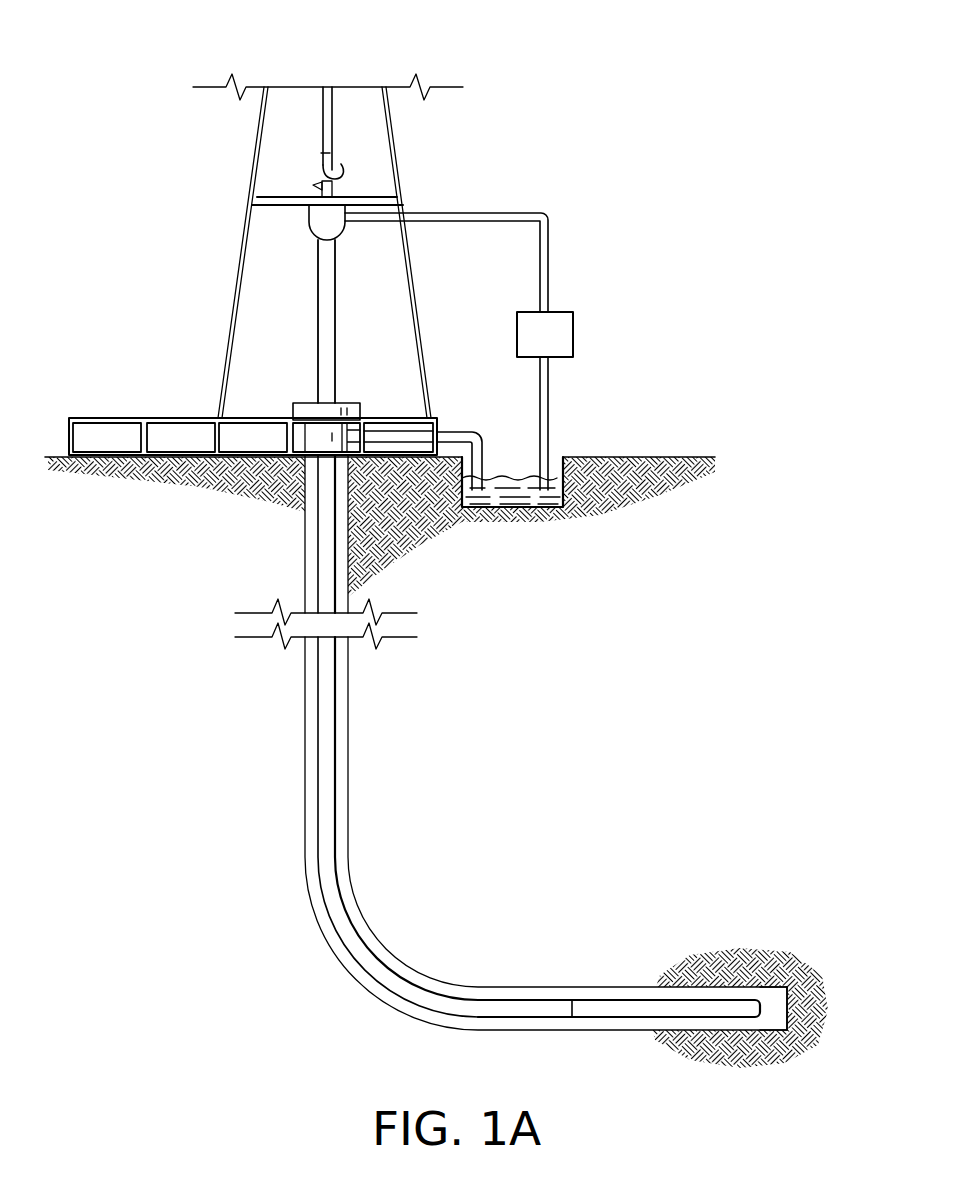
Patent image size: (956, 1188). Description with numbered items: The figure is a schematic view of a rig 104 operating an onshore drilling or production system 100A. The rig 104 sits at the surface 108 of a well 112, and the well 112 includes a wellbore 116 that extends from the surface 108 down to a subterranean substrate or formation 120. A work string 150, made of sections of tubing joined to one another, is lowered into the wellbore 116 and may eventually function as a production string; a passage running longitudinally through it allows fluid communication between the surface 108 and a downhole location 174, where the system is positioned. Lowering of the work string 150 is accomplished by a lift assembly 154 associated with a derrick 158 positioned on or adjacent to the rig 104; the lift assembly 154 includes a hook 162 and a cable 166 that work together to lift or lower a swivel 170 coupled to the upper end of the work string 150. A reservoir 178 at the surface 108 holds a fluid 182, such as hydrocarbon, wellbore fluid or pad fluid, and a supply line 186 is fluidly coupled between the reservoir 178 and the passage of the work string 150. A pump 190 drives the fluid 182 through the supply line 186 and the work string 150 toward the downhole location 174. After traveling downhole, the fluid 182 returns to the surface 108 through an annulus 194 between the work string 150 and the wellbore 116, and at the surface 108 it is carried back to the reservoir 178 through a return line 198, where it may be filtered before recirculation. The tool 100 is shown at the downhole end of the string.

The onshore drilling or production system 100A is at (645, 78).
The downhole tool 100 is at (599, 988).
The rig 104 is at (112, 417).
The surface 108 is at (652, 456).
The well 112 is at (307, 225).
The wellbore 116 is at (305, 748).
The subterranean formation 120 is at (728, 941).
The work string 150 is at (318, 703).
The lift assembly 154 is at (300, 98).
The derrick 158 is at (418, 282).
The hook 162 is at (343, 181).
The cable 166 is at (322, 147).
The swivel 170 is at (318, 240).
The downhole location 174 is at (748, 976).
The reservoir 178 is at (510, 508).
The fluid 182 is at (493, 477).
The supply line 186 is at (500, 212).
The pump 190 is at (574, 336).
The annulus 194 is at (305, 785).
The return line 198 is at (450, 432).